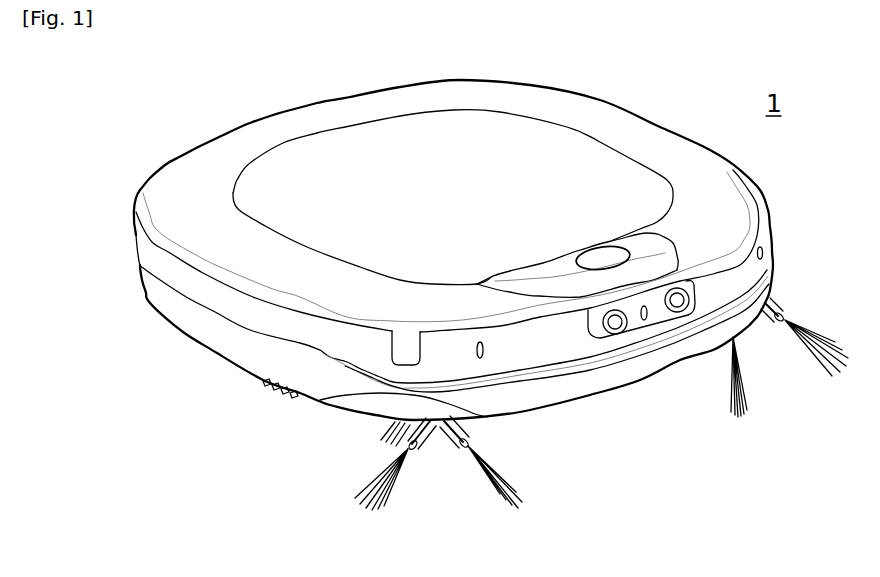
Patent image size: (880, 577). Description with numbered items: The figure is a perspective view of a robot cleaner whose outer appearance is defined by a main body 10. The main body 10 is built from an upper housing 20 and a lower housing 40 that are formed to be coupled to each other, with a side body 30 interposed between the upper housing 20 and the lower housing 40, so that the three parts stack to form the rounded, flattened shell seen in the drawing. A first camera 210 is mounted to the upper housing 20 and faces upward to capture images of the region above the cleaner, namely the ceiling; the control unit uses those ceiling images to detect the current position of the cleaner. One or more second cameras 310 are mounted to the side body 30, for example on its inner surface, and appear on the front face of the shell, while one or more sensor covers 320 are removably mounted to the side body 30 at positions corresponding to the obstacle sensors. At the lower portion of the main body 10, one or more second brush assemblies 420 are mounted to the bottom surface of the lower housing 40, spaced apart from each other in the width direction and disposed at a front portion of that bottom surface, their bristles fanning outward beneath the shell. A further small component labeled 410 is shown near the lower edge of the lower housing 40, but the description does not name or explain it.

The main body 10 is at (77, 192).
The upper housing 20 is at (173, 192).
The side body 30 is at (150, 253).
The lower housing 40 is at (157, 297).
The first camera 210 is at (613, 253).
The second cameras 310 is at (678, 308).
The sensor covers 320 is at (405, 353).
The protrusions 410 is at (266, 404).
The second brush assemblies 420 is at (390, 478).